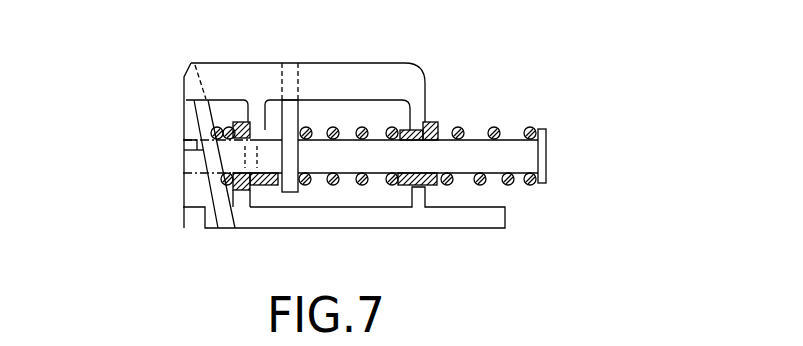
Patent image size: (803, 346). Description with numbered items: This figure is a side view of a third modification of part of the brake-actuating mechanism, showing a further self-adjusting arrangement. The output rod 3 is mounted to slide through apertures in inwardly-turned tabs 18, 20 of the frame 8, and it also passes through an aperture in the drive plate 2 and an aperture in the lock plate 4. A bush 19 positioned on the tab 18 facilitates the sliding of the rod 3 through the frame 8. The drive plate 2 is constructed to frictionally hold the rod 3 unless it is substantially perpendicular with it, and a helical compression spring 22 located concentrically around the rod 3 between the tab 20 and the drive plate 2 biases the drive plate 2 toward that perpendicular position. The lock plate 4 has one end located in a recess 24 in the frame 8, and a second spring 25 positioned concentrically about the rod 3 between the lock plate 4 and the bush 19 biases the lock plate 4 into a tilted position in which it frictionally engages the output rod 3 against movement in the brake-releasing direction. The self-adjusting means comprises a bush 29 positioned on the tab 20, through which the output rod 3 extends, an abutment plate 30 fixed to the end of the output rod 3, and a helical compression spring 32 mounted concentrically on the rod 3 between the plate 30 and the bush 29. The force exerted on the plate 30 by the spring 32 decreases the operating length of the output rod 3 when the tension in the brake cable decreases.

The drive plate 2 is at (295, 196).
The output rod 3 is at (240, 120).
The lock plate 4 is at (192, 120).
The frame 8 is at (388, 80).
The tab 18 is at (257, 192).
The bush 19 is at (250, 205).
The tab 20 is at (415, 200).
The helical compression spring 22 is at (371, 182).
The recess 24 is at (207, 223).
The second spring 25 is at (222, 183).
The bush 29 is at (433, 122).
The abutment plate 30 is at (320, 138).
The helical compression spring 32 is at (517, 178).